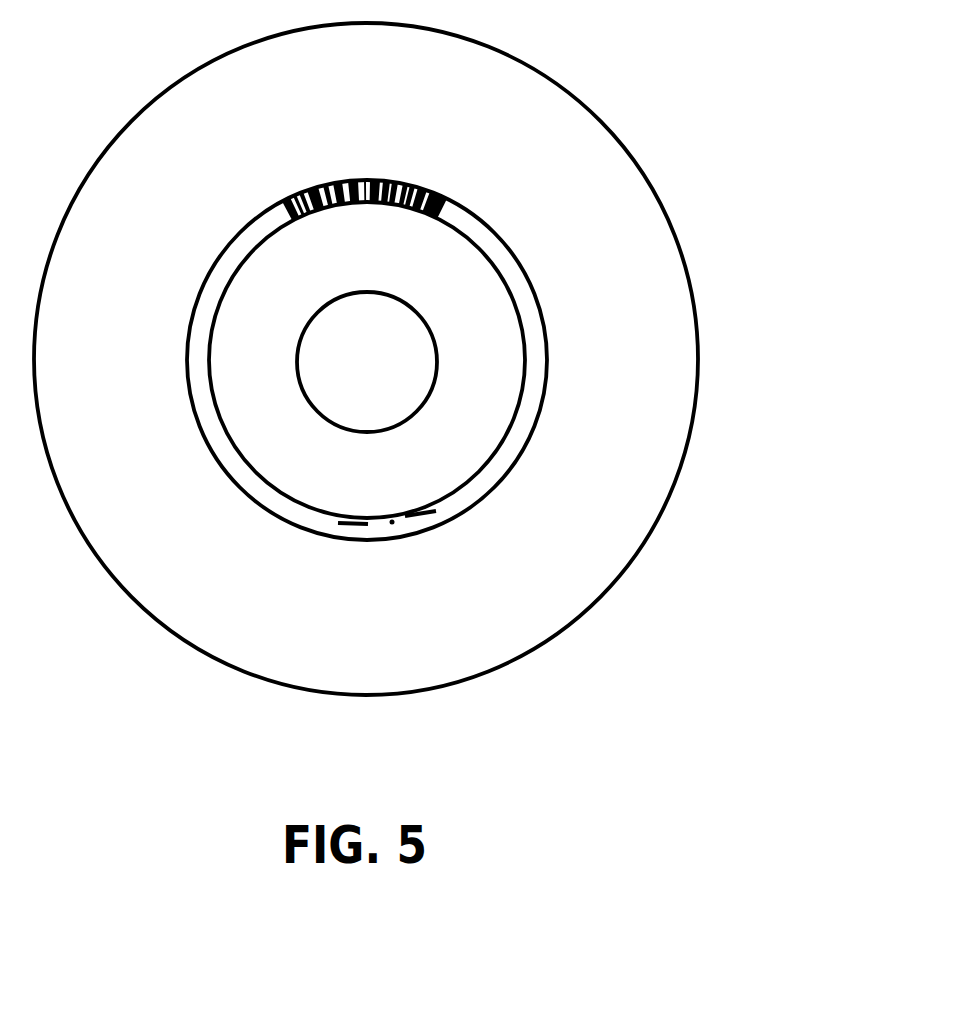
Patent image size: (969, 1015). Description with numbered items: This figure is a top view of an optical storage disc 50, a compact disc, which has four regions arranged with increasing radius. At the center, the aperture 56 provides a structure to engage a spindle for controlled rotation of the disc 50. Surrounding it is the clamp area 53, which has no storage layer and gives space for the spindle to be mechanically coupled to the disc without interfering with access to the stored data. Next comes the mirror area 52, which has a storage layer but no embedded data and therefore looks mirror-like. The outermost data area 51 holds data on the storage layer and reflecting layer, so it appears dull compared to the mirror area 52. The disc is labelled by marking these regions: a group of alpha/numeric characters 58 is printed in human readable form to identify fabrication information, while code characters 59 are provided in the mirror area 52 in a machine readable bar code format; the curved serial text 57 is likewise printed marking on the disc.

The optical disc 50 is at (523, 58).
The data area 51 is at (635, 225).
The mirror area 52 is at (517, 417).
The clamp area 53 is at (487, 367).
The aperture 56 is at (403, 335).
The serial number 57 is at (320, 500).
The alpha/numeric characters 58 is at (426, 517).
The code characters 59 is at (380, 200).